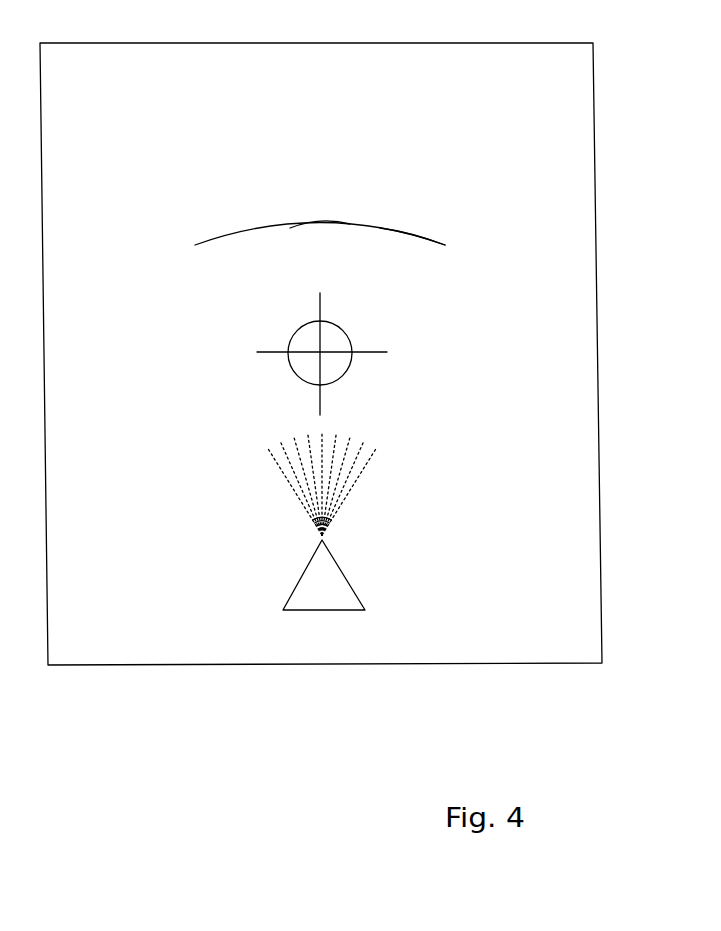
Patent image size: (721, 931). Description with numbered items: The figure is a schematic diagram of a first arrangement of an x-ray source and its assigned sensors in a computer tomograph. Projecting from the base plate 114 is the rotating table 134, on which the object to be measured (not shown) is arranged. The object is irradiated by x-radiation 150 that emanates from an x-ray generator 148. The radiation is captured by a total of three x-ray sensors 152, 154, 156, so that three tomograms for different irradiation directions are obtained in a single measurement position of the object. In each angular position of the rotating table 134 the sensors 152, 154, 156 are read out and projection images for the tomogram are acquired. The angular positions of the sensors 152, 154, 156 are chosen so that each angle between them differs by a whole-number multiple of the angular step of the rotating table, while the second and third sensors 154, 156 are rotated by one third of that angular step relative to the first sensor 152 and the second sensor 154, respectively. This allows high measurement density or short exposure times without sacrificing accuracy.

The base plate 114 is at (520, 200).
The rotating table 134 is at (355, 350).
The x-ray generator 148 is at (323, 587).
The x-radiation 150 is at (348, 475).
The first x-ray sensor 152 is at (240, 235).
The second x-ray sensor 154 is at (323, 223).
The third x-ray sensor 156 is at (410, 235).